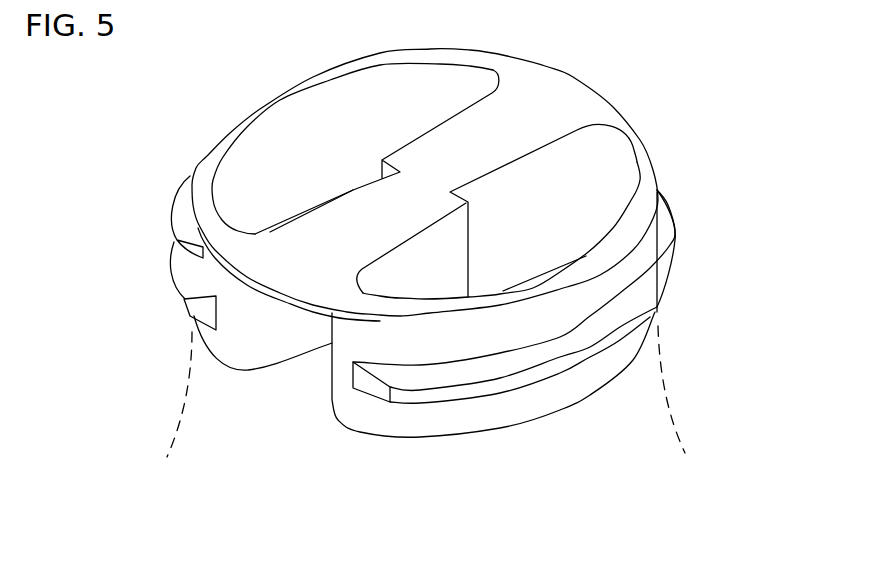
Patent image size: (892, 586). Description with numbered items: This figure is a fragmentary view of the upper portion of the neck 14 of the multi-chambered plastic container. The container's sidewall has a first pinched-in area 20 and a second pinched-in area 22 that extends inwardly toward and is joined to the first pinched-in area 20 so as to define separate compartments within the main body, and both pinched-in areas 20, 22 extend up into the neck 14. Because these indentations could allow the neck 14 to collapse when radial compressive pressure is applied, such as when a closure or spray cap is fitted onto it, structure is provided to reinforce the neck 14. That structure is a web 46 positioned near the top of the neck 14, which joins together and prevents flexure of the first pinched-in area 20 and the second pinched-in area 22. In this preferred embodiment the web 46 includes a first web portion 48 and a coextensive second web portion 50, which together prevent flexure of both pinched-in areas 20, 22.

The neck 14 is at (542, 378).
The first pinched-in area 20 is at (680, 196).
The second pinched-in area 22 is at (313, 378).
The web 46 is at (519, 111).
The first web portion 48 is at (317, 248).
The second web portion 50 is at (533, 132).